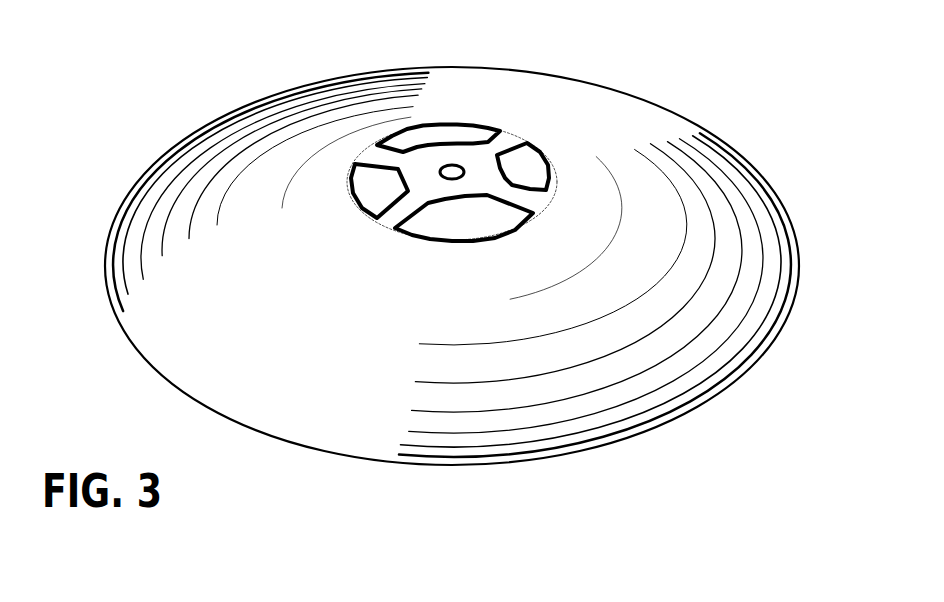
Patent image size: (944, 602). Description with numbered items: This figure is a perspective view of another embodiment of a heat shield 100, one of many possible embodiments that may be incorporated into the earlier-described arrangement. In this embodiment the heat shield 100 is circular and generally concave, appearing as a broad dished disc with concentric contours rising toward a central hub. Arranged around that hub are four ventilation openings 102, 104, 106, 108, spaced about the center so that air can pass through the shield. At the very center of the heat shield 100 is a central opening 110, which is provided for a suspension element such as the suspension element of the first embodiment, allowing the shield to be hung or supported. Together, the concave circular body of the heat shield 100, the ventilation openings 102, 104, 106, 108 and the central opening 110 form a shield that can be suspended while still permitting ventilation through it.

The heat shield 100 is at (714, 70).
The ventilation opening 102 is at (377, 188).
The ventilation opening 104 is at (440, 140).
The ventilation opening 106 is at (522, 183).
The ventilation opening 108 is at (468, 225).
The central opening 110 is at (457, 172).